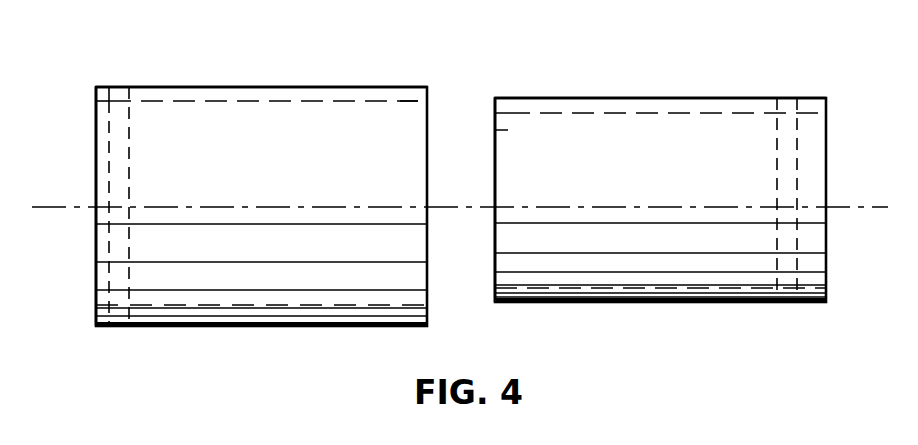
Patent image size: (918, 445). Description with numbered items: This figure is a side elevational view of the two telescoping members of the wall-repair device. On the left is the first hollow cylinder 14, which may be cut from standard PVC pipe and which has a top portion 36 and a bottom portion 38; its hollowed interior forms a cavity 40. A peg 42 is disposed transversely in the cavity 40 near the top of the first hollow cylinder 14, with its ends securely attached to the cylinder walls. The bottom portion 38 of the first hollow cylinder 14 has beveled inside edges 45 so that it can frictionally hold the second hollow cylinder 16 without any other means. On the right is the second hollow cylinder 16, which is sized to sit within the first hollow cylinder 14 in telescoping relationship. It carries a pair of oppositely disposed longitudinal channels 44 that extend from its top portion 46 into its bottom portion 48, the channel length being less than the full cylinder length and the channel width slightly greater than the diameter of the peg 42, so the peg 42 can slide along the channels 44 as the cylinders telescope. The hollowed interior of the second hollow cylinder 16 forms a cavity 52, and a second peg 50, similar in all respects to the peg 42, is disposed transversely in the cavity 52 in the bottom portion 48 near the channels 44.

The first hollow cylinder 14 is at (261, 76).
The second hollow cylinder 16 is at (610, 94).
The top portion 36 is at (160, 97).
The bottom portion 38 is at (402, 92).
The cavity 40 is at (95, 162).
The peg 42 is at (114, 284).
The longitudinal channels 44 is at (520, 102).
The beveled inside edges 45 is at (416, 102).
The top portion 46 is at (494, 128).
The bottom portion 48 is at (808, 97).
The peg 50 is at (785, 151).
The cavity 52 is at (556, 240).